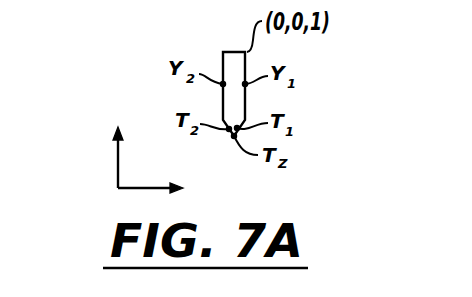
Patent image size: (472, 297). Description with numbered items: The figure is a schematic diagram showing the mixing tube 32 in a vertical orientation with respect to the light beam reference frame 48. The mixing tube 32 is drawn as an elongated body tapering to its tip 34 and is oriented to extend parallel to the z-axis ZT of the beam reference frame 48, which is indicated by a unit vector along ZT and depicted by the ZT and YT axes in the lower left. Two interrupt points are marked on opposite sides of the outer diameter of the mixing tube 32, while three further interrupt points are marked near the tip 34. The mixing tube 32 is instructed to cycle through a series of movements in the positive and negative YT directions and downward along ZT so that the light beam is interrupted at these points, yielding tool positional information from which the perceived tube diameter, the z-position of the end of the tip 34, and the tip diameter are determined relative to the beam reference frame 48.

The mixing tube 32 is at (245, 105).
The tip 34 is at (233, 136).
The beam reference frame 48 is at (118, 169).